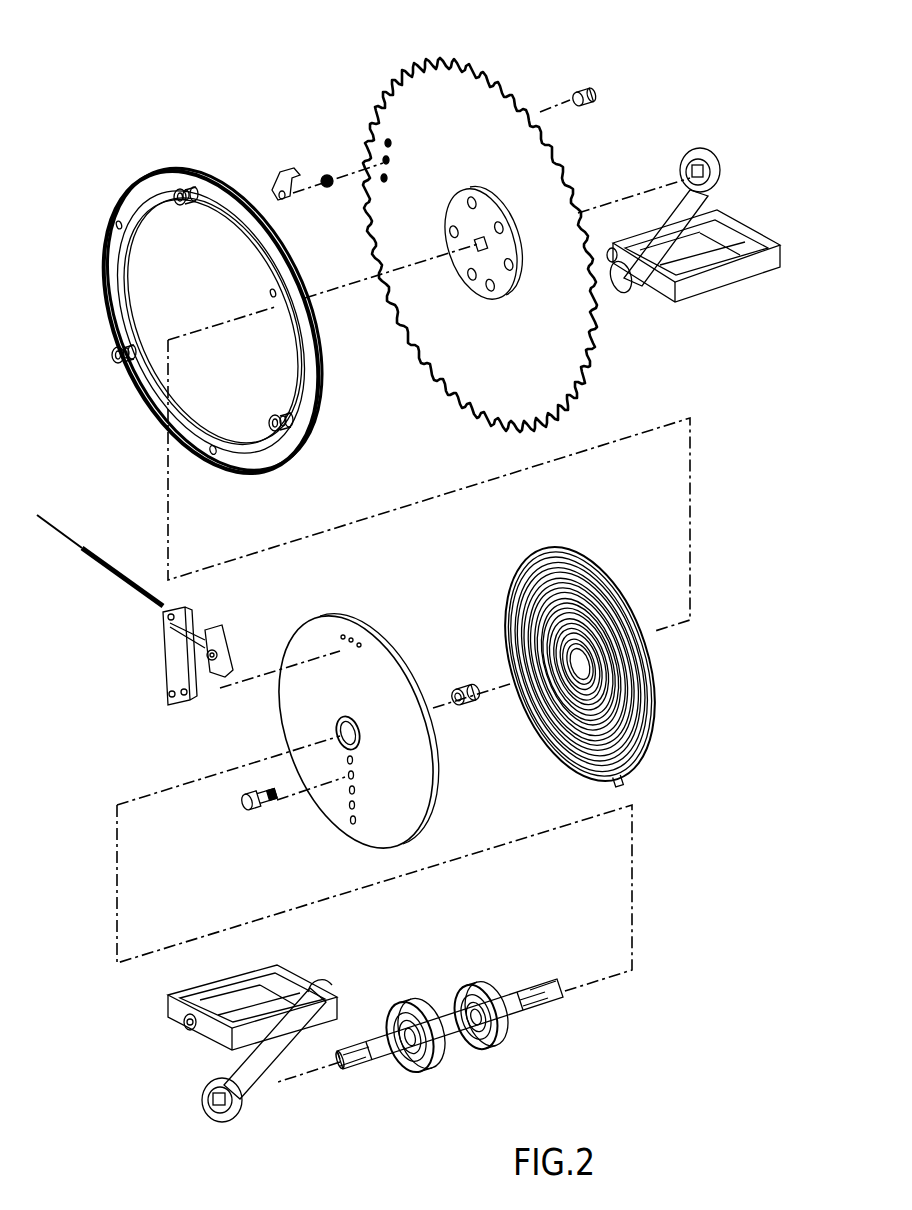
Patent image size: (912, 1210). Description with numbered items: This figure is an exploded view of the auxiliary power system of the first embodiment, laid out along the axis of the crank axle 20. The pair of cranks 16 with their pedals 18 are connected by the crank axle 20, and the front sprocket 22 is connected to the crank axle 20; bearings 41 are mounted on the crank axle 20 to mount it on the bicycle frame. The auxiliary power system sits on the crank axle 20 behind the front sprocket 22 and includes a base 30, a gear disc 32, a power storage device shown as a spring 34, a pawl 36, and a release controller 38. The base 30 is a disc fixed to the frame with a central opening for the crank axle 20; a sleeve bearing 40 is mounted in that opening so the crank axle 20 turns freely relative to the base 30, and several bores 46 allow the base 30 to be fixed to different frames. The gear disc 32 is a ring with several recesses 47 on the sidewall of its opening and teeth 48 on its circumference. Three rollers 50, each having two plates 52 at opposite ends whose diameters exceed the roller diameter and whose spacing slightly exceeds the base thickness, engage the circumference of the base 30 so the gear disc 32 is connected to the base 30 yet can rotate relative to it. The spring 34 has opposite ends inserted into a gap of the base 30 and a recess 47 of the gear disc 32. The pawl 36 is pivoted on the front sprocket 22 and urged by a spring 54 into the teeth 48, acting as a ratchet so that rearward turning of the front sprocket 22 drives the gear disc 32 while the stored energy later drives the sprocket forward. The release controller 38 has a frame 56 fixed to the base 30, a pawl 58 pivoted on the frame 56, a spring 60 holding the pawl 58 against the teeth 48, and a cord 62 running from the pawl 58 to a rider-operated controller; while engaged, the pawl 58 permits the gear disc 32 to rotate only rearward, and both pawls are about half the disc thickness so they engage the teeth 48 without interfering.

The cranks 16 is at (680, 178).
The pedals 18 is at (736, 270).
The crank axle 20 is at (386, 1052).
The front sprocket 22 is at (484, 110).
The base 30 is at (405, 790).
The gear disc 32 is at (212, 285).
The spring 34 is at (605, 582).
The pawl 36 is at (288, 170).
The release controller 38 is at (179, 641).
The bearing 40 is at (456, 688).
The bearings 41 is at (400, 1003).
The bores 46 is at (345, 778).
The recesses 47 is at (214, 458).
The teeth 48 is at (208, 180).
The rollers 50 is at (176, 192).
The plates 52 is at (188, 190).
The spring 54 is at (326, 175).
The frame 56 is at (168, 675).
The pawl 58 is at (240, 640).
The spring 60 is at (207, 664).
The cord 62 is at (46, 523).